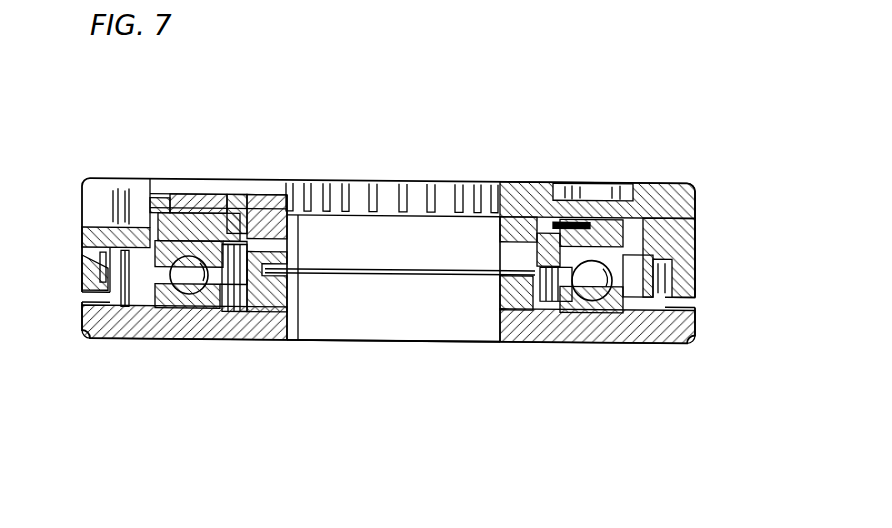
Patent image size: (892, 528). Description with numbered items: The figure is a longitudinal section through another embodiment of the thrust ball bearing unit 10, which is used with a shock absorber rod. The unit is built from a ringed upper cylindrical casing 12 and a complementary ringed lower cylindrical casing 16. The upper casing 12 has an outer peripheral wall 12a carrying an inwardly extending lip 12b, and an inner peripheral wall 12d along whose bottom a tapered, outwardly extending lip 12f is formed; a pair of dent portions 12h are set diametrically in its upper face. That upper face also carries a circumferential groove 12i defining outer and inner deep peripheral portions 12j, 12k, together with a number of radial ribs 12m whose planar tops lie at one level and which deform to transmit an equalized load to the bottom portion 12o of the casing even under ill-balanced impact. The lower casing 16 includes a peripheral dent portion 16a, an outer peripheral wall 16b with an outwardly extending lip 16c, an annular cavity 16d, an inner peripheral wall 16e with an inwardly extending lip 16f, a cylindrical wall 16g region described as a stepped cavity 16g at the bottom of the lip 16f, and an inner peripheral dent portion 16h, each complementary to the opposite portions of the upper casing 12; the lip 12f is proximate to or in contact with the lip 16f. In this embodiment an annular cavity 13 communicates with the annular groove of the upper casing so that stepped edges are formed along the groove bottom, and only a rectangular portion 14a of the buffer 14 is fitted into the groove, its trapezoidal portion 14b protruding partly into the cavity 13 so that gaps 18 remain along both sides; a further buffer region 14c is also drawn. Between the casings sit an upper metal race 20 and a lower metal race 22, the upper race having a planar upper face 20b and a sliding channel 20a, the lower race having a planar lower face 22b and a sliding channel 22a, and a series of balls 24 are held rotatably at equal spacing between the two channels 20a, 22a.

The thrust ball bearing unit 10 is at (717, 200).
The upper cylindrical casing 12 is at (708, 169).
The outer peripheral wall 12a is at (95, 232).
The inwardly extending lip 12b is at (92, 280).
The inner peripheral wall 12d is at (287, 248).
The outwardly extending lip 12f is at (292, 268).
The dent portions 12h is at (568, 180).
The circumferential groove 12i is at (192, 185).
The outer deep peripheral portion 12j is at (90, 180).
The inner deep peripheral portion 12k is at (282, 178).
The ribs 12m is at (418, 180).
The bottom portion 12o is at (92, 188).
The annular cavity 13 is at (160, 198).
The buffer 14 is at (135, 212).
The rectangular portion 14a is at (200, 200).
The trapezoidal portion 14b is at (262, 205).
The bearing flange 14c is at (237, 200).
The lower cylindrical casing 16 is at (694, 340).
The peripheral dent portion 16a is at (98, 294).
The outer peripheral wall 16b is at (105, 312).
The outwardly extending lip 16c is at (100, 258).
The annular cavity 16d is at (118, 322).
The inner peripheral wall 16e is at (258, 330).
The inwardly extending lip 16f is at (325, 180).
The stepped cavity 16g is at (205, 330).
The inner peripheral dent portion 16h is at (295, 274).
The gaps 18 is at (118, 195).
The upper metal race 20 is at (638, 180).
The sliding channel 20a is at (492, 180).
The upper face 20b is at (606, 180).
The lower metal race 22 is at (595, 312).
The sliding channel 22a is at (545, 312).
The lower face 22b is at (630, 320).
The balls 24 is at (150, 300).